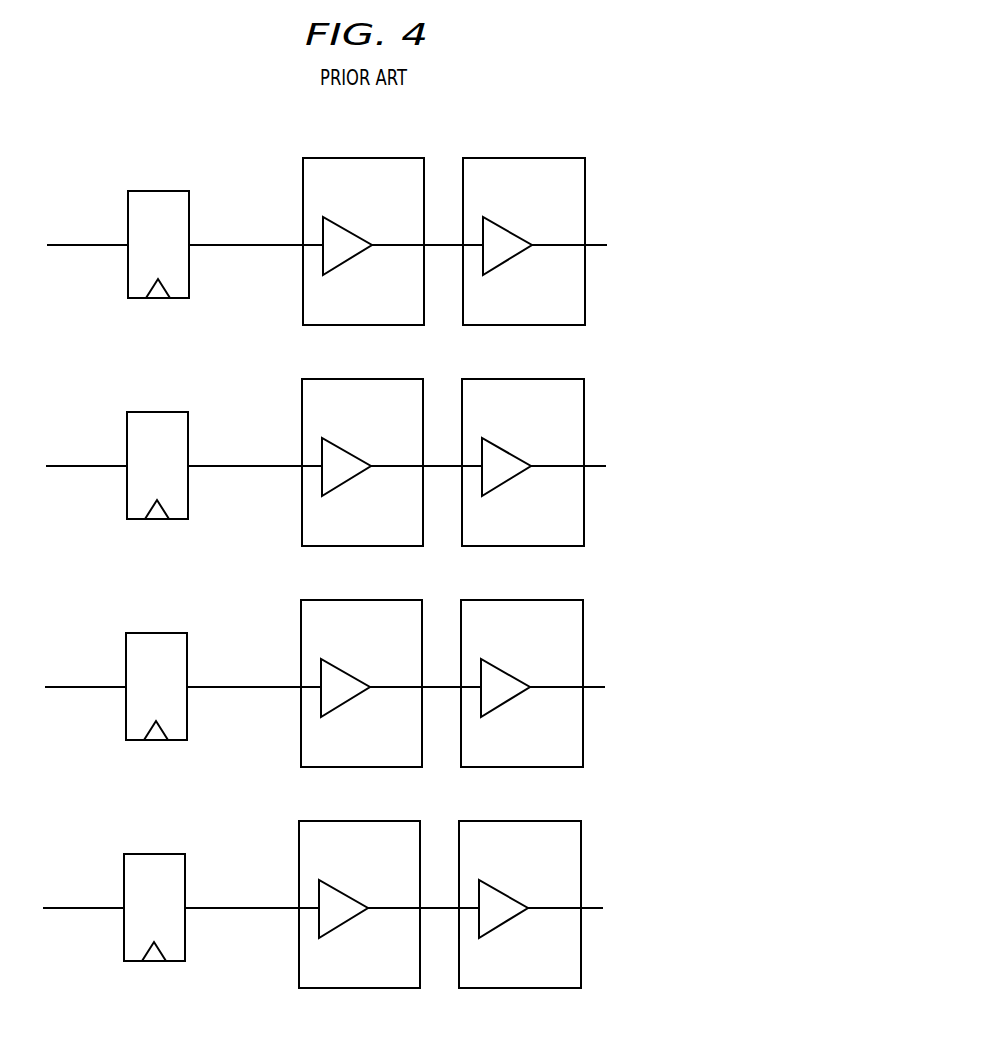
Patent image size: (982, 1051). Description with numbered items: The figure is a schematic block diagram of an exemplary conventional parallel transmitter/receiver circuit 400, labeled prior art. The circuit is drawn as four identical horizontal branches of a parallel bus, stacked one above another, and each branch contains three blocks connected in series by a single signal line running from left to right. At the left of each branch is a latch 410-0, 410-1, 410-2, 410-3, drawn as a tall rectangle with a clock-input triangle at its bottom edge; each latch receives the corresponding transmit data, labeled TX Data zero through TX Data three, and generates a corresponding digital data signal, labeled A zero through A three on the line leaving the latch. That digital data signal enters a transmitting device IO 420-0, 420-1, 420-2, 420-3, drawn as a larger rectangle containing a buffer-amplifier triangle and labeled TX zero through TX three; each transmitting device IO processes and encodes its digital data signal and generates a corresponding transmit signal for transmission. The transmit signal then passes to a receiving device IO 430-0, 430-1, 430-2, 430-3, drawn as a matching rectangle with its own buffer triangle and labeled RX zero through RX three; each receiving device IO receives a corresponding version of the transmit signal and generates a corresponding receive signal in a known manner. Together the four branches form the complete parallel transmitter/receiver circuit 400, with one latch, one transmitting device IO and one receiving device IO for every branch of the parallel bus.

The parallel transmitter/receiver circuit 400 is at (618, 102).
The latch 410-0 is at (148, 191).
The latch 410-1 is at (174, 449).
The latch 410-2 is at (173, 670).
The latch 410-3 is at (171, 891).
The transmitting device IO 420-0 is at (345, 155).
The transmitting device IO 420-1 is at (363, 444).
The transmitting device IO 420-2 is at (362, 665).
The transmitting device IO 420-3 is at (360, 886).
The receiving device IO 430-0 is at (505, 155).
The receiving device IO 430-1 is at (524, 444).
The receiving device IO 430-2 is at (523, 665).
The receiving device IO 430-3 is at (521, 886).